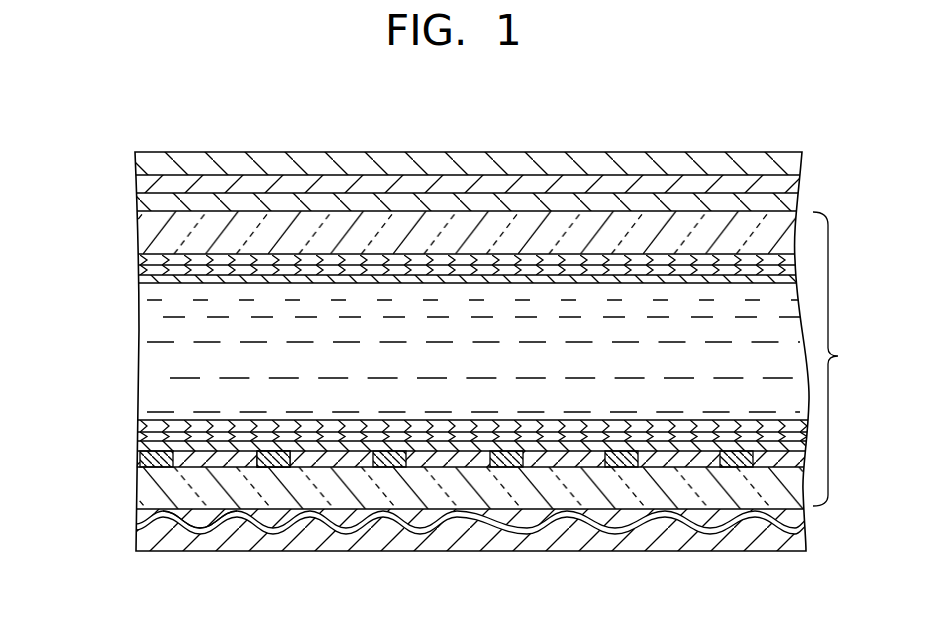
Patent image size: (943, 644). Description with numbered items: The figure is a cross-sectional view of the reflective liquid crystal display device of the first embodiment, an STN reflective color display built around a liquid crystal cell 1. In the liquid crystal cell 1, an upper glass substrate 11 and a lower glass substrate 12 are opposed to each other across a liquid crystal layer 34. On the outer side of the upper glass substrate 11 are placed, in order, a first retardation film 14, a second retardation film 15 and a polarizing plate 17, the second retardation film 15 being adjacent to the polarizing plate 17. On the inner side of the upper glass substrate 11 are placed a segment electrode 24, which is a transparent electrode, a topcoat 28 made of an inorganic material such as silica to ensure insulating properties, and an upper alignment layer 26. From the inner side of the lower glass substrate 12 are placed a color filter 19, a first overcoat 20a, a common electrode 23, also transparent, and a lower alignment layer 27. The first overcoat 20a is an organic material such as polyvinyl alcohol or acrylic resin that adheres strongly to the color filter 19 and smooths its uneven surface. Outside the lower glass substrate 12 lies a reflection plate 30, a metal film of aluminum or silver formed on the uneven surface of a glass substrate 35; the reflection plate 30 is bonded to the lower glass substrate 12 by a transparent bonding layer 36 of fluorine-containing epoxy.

The liquid crystal cell 1 is at (836, 359).
The upper glass substrate 11 is at (143, 223).
The lower glass substrate 12 is at (143, 486).
The first retardation film 14 is at (143, 202).
The second retardation film 15 is at (143, 186).
The polarizing plate 17 is at (142, 160).
The color filter 19 is at (270, 455).
The first overcoat 20a is at (140, 452).
The common electrode 23 is at (148, 438).
The segment electrode 24 is at (143, 259).
The upper alignment layer 26 is at (143, 280).
The lower alignment layer 27 is at (167, 425).
The topcoat 28 is at (143, 271).
The reflection plate 30 is at (190, 531).
The liquid crystal layer 34 is at (158, 360).
The glass substrate 35 is at (348, 540).
The transparent bonding layer 36 is at (527, 530).